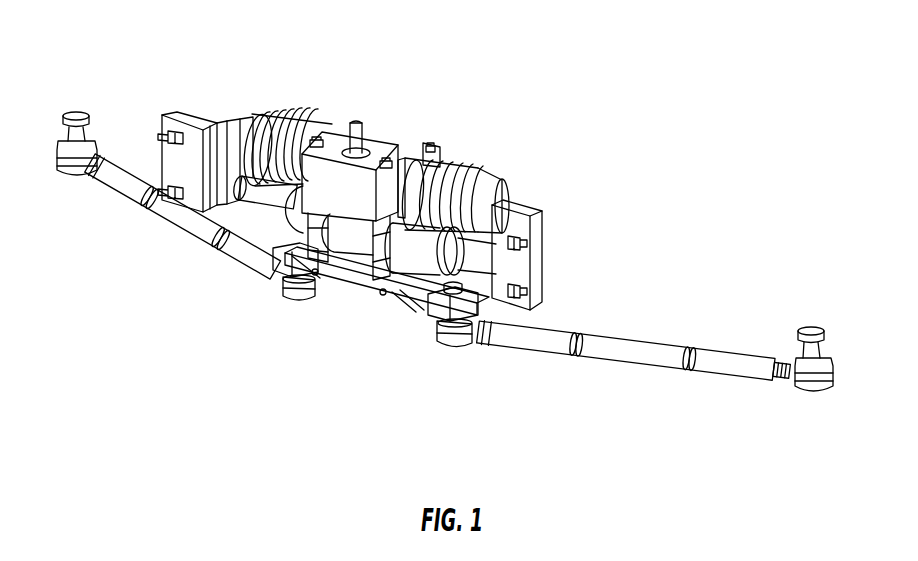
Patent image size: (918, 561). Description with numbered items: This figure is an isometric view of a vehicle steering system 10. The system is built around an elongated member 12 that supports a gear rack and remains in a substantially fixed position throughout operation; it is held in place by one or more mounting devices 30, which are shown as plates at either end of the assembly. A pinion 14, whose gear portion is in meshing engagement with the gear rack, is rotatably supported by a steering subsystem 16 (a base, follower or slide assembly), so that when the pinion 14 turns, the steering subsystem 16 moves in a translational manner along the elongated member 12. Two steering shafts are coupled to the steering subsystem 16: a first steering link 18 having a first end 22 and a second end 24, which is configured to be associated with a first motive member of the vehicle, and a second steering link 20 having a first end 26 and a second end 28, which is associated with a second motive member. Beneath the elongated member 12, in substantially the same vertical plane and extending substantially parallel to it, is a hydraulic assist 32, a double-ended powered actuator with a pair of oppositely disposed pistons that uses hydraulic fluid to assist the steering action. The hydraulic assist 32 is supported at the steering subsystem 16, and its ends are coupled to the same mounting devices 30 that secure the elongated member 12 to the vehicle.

The vehicle steering system 10 is at (486, 67).
The elongated member 12 is at (498, 200).
The pinion 14 is at (380, 137).
The steering subsystem 16 is at (346, 308).
The first steering link 18 is at (168, 222).
The second steering link 20 is at (618, 364).
The first end 22 is at (250, 278).
The second end 24 is at (97, 183).
The first end 26 is at (500, 350).
The second end 28 is at (752, 378).
The mounting device 30 is at (207, 102).
The hydraulic assist 32 is at (412, 258).